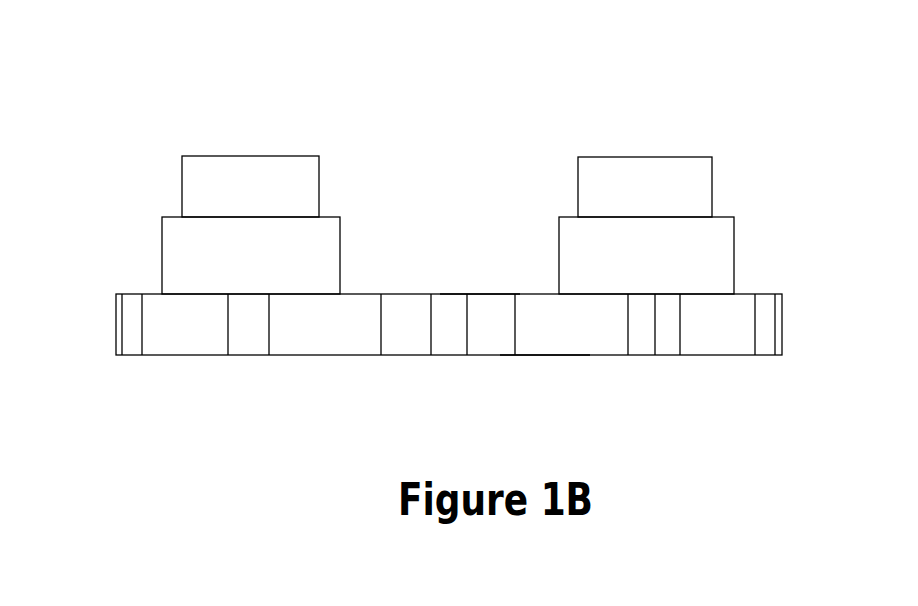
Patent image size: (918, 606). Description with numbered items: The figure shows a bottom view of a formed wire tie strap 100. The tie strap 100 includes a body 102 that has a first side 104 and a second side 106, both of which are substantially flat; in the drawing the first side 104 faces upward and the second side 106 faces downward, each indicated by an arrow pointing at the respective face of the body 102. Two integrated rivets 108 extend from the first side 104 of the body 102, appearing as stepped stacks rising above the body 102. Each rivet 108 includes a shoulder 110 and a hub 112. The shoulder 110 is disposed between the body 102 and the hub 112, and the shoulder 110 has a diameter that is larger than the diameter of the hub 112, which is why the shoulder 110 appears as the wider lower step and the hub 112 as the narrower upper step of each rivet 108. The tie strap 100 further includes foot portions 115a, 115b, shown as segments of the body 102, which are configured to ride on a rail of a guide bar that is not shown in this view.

The formed wire tie strap 100 is at (103, 100).
The body 102 is at (405, 320).
The first side 104 is at (479, 285).
The second side 106 is at (544, 368).
The integrated rivet 108 is at (647, 145).
The shoulder 110 is at (670, 248).
The hub 112 is at (610, 177).
The foot portion 115a is at (647, 327).
The foot portion 115b is at (250, 327).